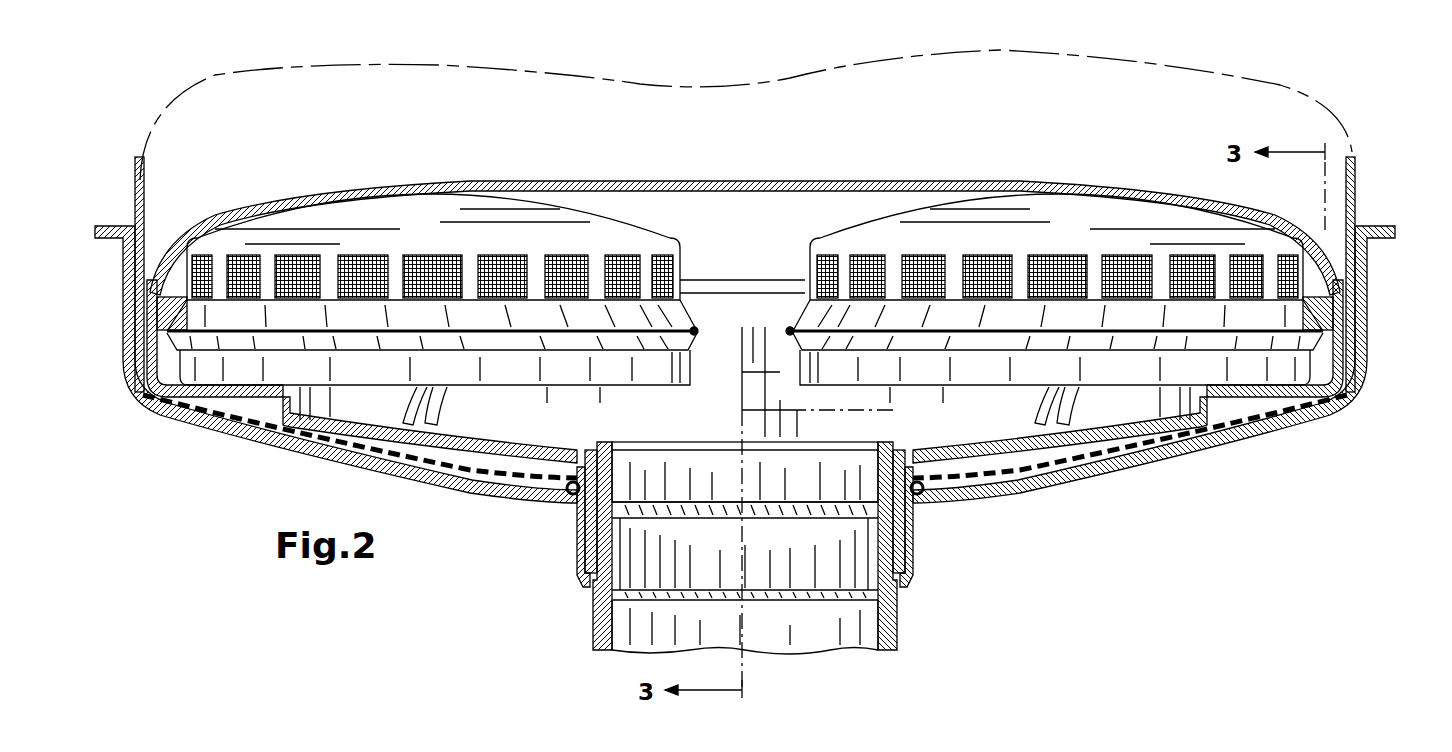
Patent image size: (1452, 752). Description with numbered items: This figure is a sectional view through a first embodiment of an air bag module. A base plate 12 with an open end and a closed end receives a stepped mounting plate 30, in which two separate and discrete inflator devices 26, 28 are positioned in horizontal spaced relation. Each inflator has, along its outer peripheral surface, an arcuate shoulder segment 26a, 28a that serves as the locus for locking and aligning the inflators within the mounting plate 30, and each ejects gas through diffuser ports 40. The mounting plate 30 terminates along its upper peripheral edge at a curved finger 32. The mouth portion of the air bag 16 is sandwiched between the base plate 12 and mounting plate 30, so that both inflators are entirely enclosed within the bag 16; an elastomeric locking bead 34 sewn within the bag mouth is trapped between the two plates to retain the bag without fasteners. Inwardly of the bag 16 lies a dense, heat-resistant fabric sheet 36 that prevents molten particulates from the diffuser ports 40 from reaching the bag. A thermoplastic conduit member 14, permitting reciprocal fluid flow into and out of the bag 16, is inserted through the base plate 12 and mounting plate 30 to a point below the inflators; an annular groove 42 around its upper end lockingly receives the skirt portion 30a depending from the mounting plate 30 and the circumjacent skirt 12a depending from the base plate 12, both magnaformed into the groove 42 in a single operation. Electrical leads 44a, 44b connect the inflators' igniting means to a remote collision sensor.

The base plate 12 is at (1367, 270).
The skirt 12a is at (900, 553).
The conduit member 14 is at (597, 638).
The air bag 16 is at (1357, 191).
The inflator device 26 is at (632, 200).
The arcuate shoulder segment 26a is at (696, 328).
The inflator device 28 is at (843, 210).
The arcuate shoulder segment 28a is at (788, 328).
The mounting plate 30 is at (1360, 368).
The skirt portion 30a is at (897, 586).
The curved finger 32 is at (1335, 313).
The locking bead 34 is at (933, 483).
The sheet 36 is at (221, 212).
The diffuser ports 40 is at (434, 258).
The annular groove 42 is at (733, 551).
The electrical lead 44a is at (416, 398).
The electrical lead 44b is at (448, 400).